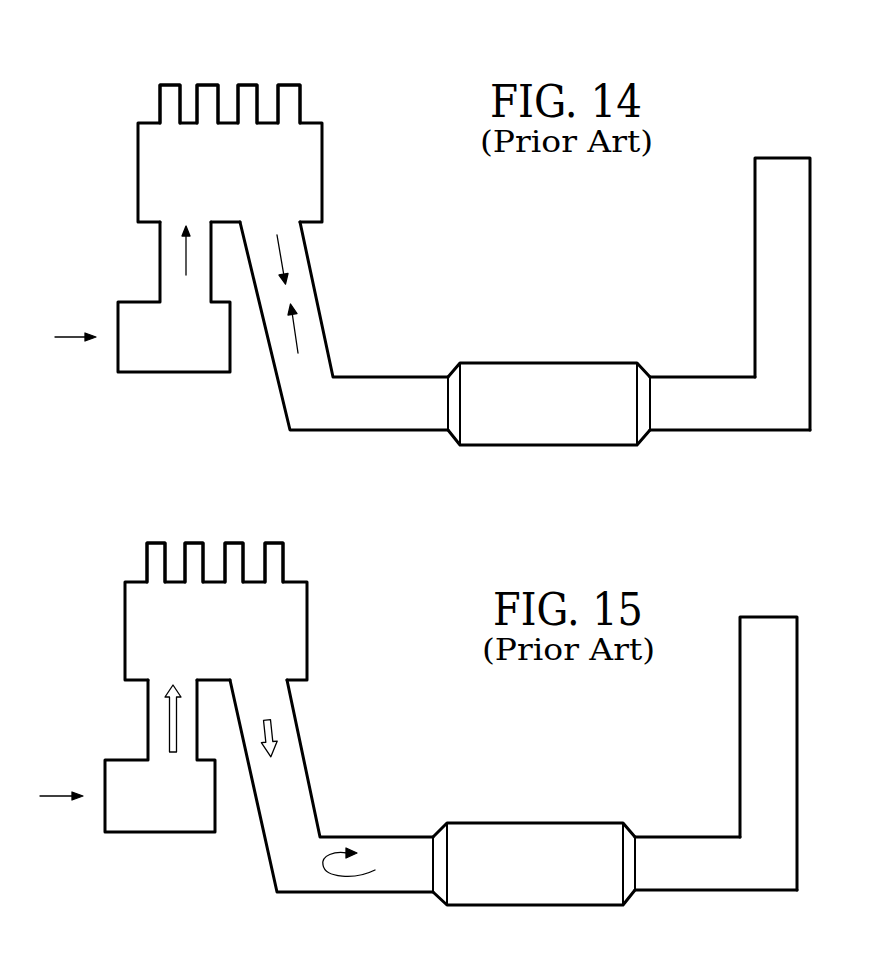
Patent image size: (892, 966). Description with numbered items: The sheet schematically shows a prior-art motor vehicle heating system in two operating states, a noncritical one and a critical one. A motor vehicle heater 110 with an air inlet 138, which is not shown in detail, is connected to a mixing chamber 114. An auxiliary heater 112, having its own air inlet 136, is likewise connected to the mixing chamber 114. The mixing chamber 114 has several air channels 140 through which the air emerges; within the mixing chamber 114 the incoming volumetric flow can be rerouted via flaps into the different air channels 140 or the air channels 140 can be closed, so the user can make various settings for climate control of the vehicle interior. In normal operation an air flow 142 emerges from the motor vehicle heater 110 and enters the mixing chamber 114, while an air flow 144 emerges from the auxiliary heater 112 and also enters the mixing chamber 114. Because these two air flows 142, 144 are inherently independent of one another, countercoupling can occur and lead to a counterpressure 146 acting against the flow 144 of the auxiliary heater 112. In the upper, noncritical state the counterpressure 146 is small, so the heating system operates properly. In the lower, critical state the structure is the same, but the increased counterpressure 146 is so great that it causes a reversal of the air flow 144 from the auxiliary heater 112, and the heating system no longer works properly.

In FIG. 14, the motor vehicle heater 110 is at (162, 362).
In FIG. 15, the motor vehicle heater 110 is at (160, 817).
In FIG. 14, the auxiliary heater 112 is at (557, 422).
In FIG. 15, the auxiliary heater 112 is at (522, 835).
In FIG. 14, the mixing chamber 114 is at (303, 157).
In FIG. 15, the mixing chamber 114 is at (282, 628).
In FIG. 14, the air inlet 136 is at (772, 207).
In FIG. 15, the air inlet 136 is at (758, 725).
In FIG. 14, the air inlet 138 is at (67, 339).
In FIG. 15, the air inlet 138 is at (57, 798).
In FIG. 14, the air channels 140 is at (207, 92).
In FIG. 15, the air channels 140 is at (190, 556).
In FIG. 14, the air flow 142 is at (183, 259).
In FIG. 15, the air flow 142 is at (173, 722).
In FIG. 14, the air flow 144 is at (298, 335).
In FIG. 15, the air flow 144 is at (356, 891).
In FIG. 14, the counterpressure 146 is at (280, 255).
In FIG. 15, the counterpressure 146 is at (274, 732).